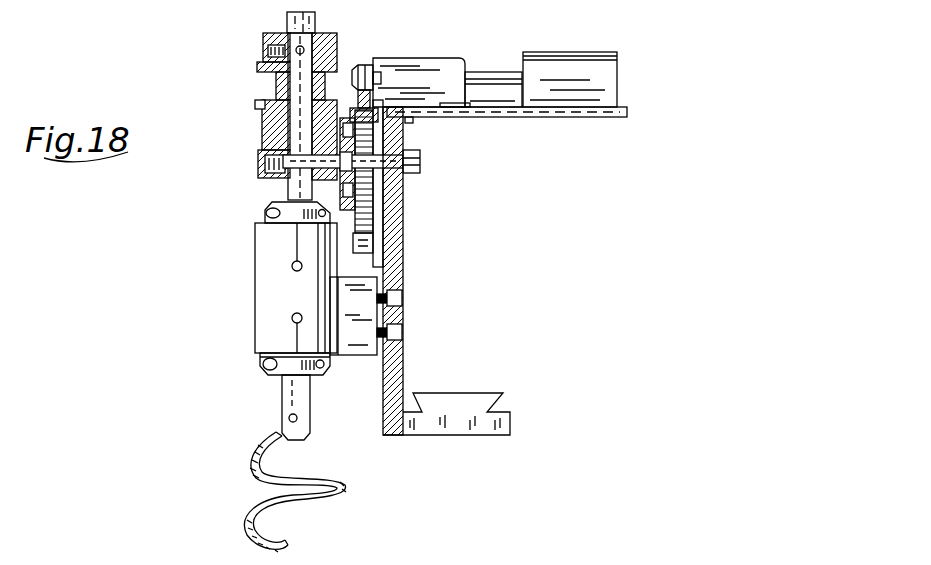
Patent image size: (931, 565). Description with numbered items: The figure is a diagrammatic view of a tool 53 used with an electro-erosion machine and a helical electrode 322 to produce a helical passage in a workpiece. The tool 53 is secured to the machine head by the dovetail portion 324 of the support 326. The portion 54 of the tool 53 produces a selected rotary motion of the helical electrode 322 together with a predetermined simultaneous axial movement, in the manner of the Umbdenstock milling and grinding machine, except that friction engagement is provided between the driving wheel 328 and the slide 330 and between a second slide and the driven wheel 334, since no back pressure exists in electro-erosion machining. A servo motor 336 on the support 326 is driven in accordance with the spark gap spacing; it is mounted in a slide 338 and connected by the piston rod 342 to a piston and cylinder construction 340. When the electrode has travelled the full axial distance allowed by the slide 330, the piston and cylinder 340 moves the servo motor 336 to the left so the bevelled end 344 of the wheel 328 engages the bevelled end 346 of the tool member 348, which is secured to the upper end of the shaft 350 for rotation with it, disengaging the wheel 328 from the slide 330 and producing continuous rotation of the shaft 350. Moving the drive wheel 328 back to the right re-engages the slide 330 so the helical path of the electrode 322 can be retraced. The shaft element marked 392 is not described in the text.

The tool 53 is at (150, 328).
The portion of the tool 54 is at (256, 262).
The helical electrode 322 is at (258, 514).
The dovetail portion 324 is at (497, 392).
The support 326 is at (403, 248).
The driving wheel 328 is at (376, 60).
The slide 330 is at (384, 220).
The driven wheel 334 is at (266, 162).
The servo motor 336 is at (455, 105).
The slide 338 is at (508, 117).
The piston and cylinder construction 340 is at (555, 52).
The piston rod 342 is at (490, 72).
The bevelled end of the wheel 344 is at (354, 65).
The bevelled end of the tool member 346 is at (272, 36).
The tool member 348 is at (262, 70).
The shaft 350 is at (281, 392).
The spindle shaft 392 is at (288, 130).